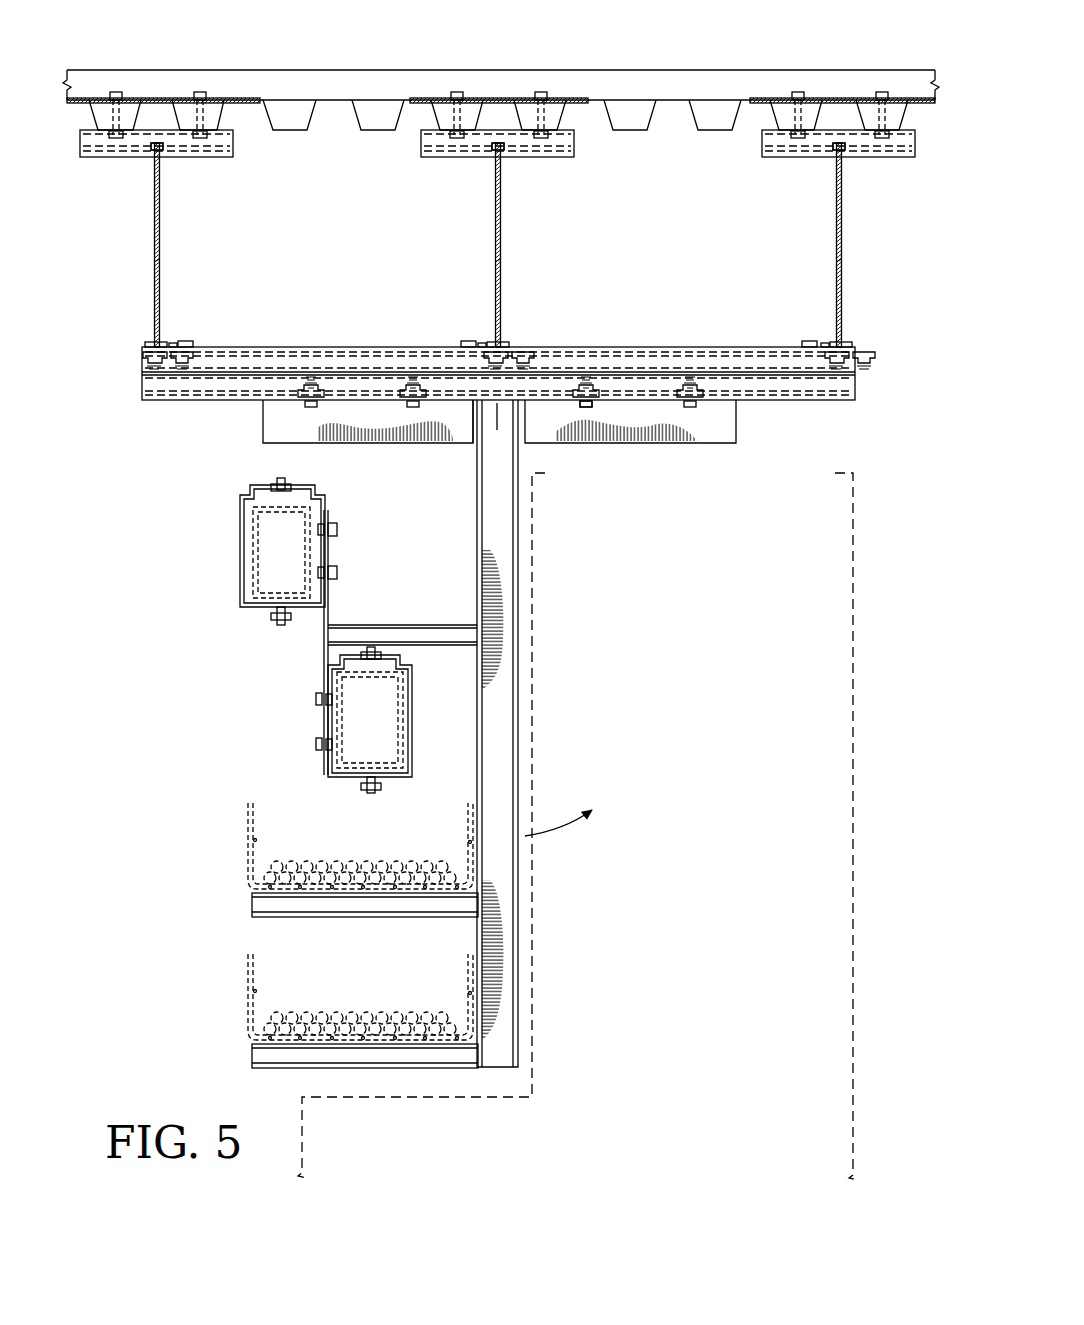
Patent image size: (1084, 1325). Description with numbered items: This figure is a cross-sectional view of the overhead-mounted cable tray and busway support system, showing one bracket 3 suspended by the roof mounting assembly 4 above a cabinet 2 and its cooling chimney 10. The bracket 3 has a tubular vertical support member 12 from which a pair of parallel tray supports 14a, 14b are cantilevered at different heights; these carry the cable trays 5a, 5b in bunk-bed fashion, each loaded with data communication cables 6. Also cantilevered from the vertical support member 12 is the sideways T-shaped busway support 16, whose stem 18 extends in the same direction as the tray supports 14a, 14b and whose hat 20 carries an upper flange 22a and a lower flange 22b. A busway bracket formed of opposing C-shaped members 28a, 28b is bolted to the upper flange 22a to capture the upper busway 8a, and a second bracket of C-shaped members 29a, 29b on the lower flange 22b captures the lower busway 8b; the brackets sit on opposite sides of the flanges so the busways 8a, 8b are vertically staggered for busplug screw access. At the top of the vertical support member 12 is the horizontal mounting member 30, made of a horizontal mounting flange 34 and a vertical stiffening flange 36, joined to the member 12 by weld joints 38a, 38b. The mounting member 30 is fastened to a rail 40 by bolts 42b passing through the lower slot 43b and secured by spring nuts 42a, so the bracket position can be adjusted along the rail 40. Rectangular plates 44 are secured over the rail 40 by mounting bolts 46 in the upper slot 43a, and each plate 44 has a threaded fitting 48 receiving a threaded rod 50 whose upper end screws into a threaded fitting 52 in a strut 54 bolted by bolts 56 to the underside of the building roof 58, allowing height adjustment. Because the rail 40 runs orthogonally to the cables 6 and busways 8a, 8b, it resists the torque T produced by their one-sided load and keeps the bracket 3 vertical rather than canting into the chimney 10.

The cabinets 2 is at (858, 1136).
The bracket 3 is at (240, 468).
The roof mounting assembly 4 is at (135, 246).
The cable tray 5a is at (248, 832).
The cable tray 5b is at (248, 982).
The data communication cables 6 is at (374, 866).
The busway 8a is at (281, 552).
The busway 8b is at (370, 720).
The cooling chimney 10 is at (500, 825).
The vertical support member 12 is at (500, 749).
The tray support 14a is at (262, 905).
The tray support 14b is at (262, 1056).
The busway support 16 is at (402, 633).
The stem 18 is at (455, 645).
The hat 20 is at (318, 634).
The upper flange 22a is at (330, 555).
The lower flange 22b is at (318, 730).
The C-shaped member 28a is at (240, 537).
The C-shaped member 28b is at (323, 500).
The C-shaped member 29a is at (413, 770).
The C-shaped member 29b is at (330, 770).
The horizontal mounting member 30 is at (546, 446).
The mounting flange 34 is at (631, 402).
The stiffening flange 36 is at (719, 428).
The weld joint 38a is at (497, 430).
The weld joint 38b is at (473, 428).
The rail 40 is at (505, 379).
The spring nut 42a is at (598, 390).
The bolt 42b is at (586, 408).
The upper slot 43a is at (856, 360).
The lower slot 43b is at (856, 384).
The rectangular plate 44 is at (172, 343).
The mounting bolt 46 is at (186, 341).
The threaded fitting 48 is at (148, 343).
The threaded rod 50 is at (160, 268).
The threaded fitting 52 is at (151, 148).
The strut 54 is at (236, 140).
The bolt 56 is at (457, 92).
The building roof 58 is at (332, 88).
The torque T is at (556, 838).